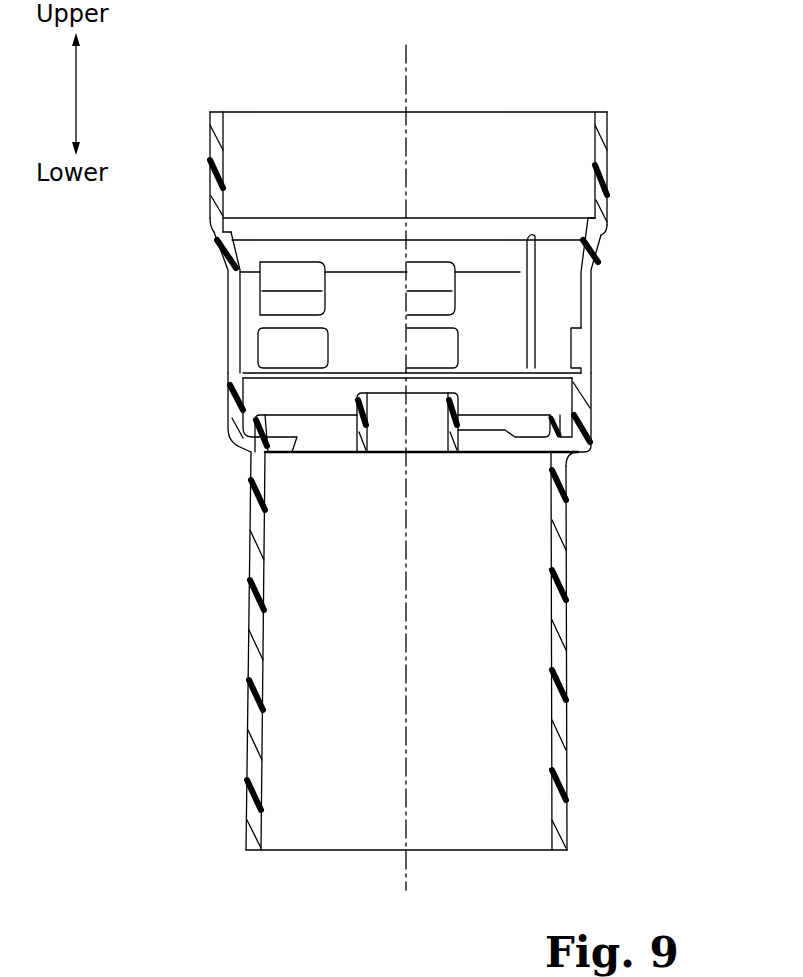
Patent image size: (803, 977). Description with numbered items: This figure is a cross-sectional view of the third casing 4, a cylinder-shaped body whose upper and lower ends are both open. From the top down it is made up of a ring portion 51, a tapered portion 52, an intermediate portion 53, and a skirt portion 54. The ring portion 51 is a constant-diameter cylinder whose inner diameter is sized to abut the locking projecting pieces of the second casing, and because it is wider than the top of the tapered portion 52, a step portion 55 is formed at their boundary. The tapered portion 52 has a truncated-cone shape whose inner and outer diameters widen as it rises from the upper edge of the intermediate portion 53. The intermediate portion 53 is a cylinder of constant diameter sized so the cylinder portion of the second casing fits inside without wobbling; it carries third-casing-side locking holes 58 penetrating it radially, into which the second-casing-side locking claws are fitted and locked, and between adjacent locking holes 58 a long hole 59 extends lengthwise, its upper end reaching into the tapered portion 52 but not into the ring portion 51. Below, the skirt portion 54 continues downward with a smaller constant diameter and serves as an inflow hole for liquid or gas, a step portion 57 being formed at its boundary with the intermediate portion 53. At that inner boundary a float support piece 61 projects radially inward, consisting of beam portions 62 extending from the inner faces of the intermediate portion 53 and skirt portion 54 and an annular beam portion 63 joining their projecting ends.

The third casing 4 is at (557, 65).
The ring portion 51 is at (218, 146).
The tapered portion 52 is at (590, 249).
The intermediate portion 53 is at (582, 284).
The skirt portion 54 is at (560, 617).
The step portion 55 is at (222, 233).
The step portion 57 is at (575, 462).
The third-casing-side locking hole 58 is at (265, 340).
The long hole 59 is at (235, 290).
The float support piece 61 is at (317, 445).
The beam portion 62 is at (340, 437).
The annular beam portion 63 is at (446, 443).